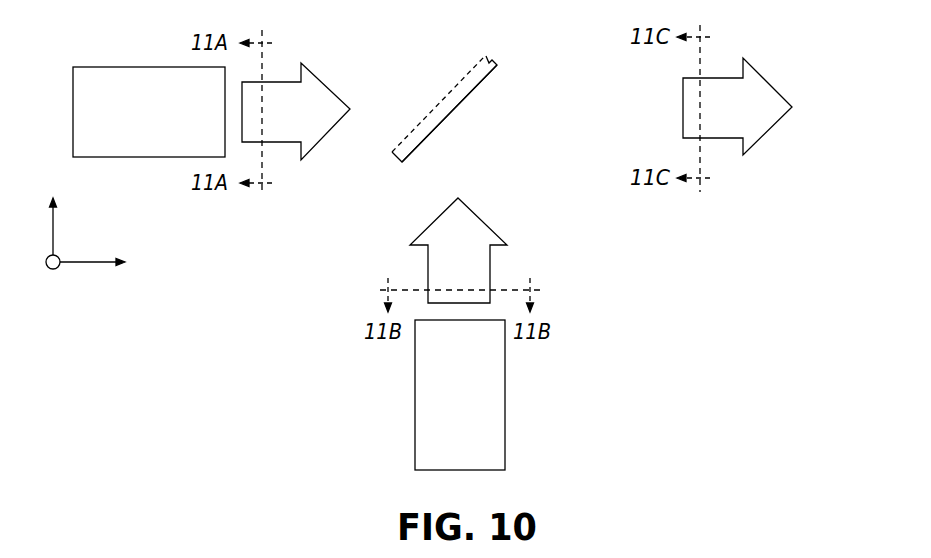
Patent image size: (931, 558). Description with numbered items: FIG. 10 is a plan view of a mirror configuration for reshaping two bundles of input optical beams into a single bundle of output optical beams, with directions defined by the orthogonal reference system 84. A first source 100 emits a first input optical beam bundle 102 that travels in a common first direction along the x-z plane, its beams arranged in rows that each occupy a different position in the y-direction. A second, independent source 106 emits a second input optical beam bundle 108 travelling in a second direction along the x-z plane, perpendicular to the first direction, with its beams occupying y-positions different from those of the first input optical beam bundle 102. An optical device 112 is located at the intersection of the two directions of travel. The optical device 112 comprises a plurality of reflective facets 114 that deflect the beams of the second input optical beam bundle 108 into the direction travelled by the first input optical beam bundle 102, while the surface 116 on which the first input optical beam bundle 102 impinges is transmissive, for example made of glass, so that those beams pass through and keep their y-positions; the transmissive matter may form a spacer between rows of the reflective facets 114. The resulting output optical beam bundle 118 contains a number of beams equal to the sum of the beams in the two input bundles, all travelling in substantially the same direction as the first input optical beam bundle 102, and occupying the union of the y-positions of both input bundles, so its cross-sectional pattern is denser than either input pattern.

The orthogonal reference system 84 is at (87, 290).
The first source 100 is at (163, 124).
The first input optical beam bundle 102 is at (322, 98).
The second source 106 is at (476, 406).
The second input optical beam bundle 108 is at (440, 233).
The optical device 112 is at (475, 97).
The reflective facets 114 is at (457, 110).
The surface 116 is at (452, 82).
The output optical beam bundle 118 is at (758, 97).